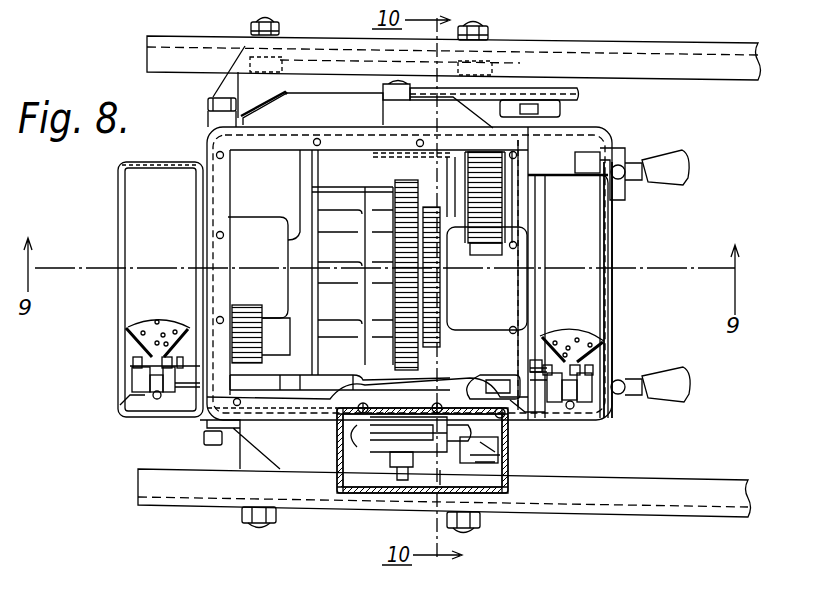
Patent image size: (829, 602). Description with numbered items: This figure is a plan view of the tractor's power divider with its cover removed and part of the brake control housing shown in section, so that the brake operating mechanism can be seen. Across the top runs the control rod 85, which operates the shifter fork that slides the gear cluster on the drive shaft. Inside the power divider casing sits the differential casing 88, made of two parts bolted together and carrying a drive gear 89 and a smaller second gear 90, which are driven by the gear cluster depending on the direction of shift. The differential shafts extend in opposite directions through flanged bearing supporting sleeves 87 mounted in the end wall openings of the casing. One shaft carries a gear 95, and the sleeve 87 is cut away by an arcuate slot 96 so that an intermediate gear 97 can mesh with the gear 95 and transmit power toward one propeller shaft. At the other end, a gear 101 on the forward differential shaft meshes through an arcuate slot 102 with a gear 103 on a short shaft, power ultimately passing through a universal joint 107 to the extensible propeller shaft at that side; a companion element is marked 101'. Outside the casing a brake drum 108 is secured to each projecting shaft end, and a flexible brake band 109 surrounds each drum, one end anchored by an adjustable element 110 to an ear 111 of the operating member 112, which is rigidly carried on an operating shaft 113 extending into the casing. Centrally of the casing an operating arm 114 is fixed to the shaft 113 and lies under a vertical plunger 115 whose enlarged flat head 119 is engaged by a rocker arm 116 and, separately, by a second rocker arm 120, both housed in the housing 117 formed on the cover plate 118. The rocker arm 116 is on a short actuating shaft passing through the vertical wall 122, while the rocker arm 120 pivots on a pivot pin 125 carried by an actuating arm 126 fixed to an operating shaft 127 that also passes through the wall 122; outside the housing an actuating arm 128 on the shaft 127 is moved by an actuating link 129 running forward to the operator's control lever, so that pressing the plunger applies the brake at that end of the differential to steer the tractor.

The control rod 85 is at (535, 100).
The flanged bearing supporting sleeve 87 is at (256, 228).
The differential casing 88 is at (314, 192).
The drive gear 89 is at (398, 185).
The second gear 90 is at (438, 318).
The gear 95 is at (242, 303).
The arcuate slot 96 is at (251, 318).
The intermediate gear 97 is at (208, 372).
The gear 101 is at (551, 296).
The guide plate 101' is at (608, 350).
The arcuate slot 102 is at (485, 246).
The gear 103 is at (490, 185).
The universal joint 107 is at (606, 149).
The brake drum 108 is at (128, 340).
The flexible brake band 109 is at (137, 216).
The adjustable element 110 is at (137, 354).
The ear 111 is at (135, 381).
The operating member 112 is at (140, 400).
The operating shaft 113 is at (126, 366).
The operating arm 114 is at (480, 430).
The vertical plunger 115 is at (670, 176).
The rocker arm 116 is at (370, 452).
The housing 117 is at (470, 440).
The cover plate 118 is at (245, 167).
The enlarged flat head 119 is at (490, 445).
The rocker arm 120 is at (387, 425).
The vertical wall 122 is at (345, 397).
The pivot pin 125 is at (405, 468).
The actuating arm 126 is at (487, 460).
The operating shaft 127 is at (490, 467).
The actuating arm 128 is at (536, 412).
The actuating link 129 is at (483, 373).